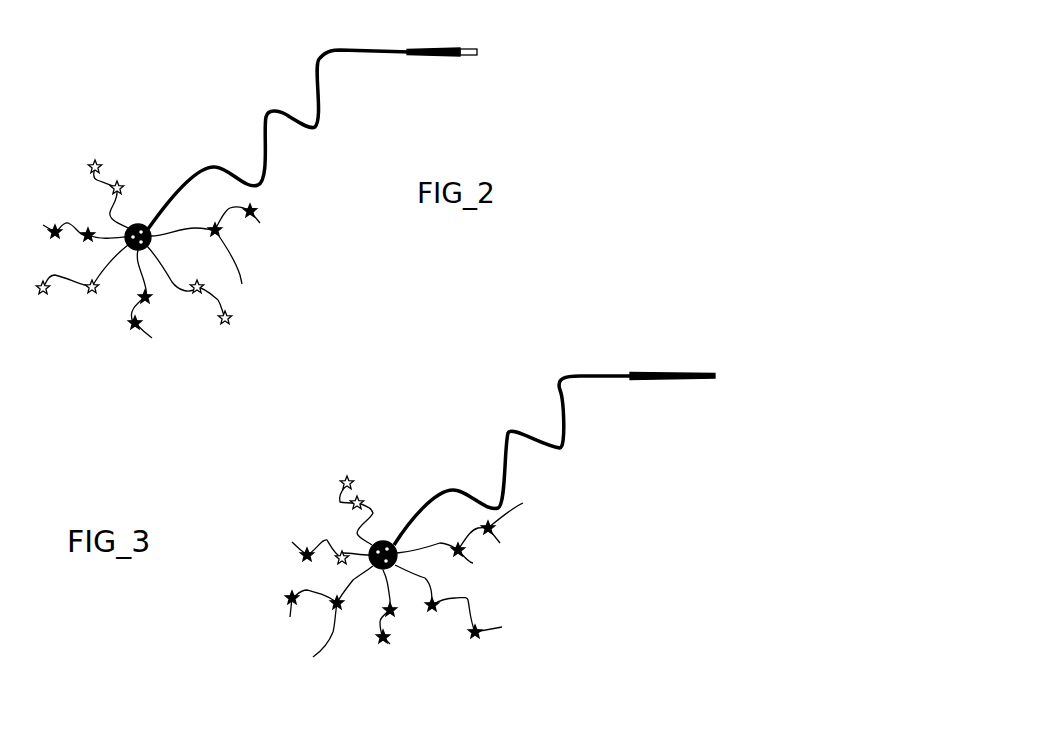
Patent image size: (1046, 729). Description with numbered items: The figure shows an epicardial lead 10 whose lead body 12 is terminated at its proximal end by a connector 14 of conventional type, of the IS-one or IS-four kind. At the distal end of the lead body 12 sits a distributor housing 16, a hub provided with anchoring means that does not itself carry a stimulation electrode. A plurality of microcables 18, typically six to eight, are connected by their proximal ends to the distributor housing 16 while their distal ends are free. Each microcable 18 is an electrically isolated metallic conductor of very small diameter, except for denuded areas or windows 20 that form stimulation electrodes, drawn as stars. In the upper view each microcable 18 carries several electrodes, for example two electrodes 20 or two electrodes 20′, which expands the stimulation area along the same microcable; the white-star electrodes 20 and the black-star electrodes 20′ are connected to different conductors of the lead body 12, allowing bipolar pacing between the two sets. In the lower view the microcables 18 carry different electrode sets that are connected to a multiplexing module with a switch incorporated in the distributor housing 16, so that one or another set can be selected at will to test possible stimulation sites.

In FIG. 2, the epicardial lead 10 is at (73, 116).
In FIG. 3, the epicardial lead 10 is at (335, 438).
In FIG. 2, the lead body 12 is at (263, 115).
In FIG. 3, the lead body 12 is at (500, 433).
In FIG. 2, the connector 14 is at (445, 51).
In FIG. 3, the connector 14 is at (672, 372).
In FIG. 2, the distributor housing 16 is at (172, 186).
In FIG. 3, the distributor housing 16 is at (384, 541).
In FIG. 2, the microcable 18 is at (95, 184).
In FIG. 3, the microcable 18 is at (335, 503).
In FIG. 2, the denuded area 20 is at (97, 165).
In FIG. 3, the denuded area 20 is at (347, 484).
In FIG. 2, the electrode 20′ is at (252, 212).
In FIG. 3, the electrode 20′ is at (480, 625).